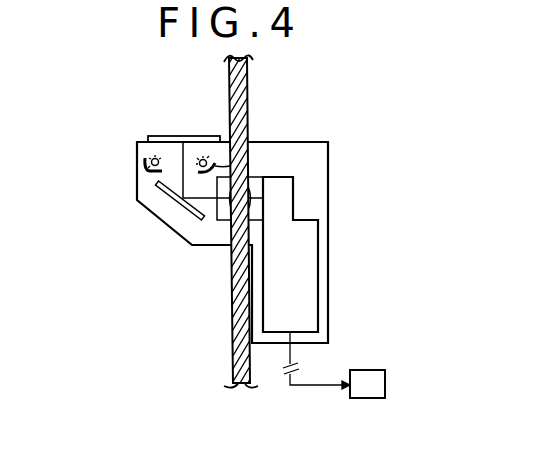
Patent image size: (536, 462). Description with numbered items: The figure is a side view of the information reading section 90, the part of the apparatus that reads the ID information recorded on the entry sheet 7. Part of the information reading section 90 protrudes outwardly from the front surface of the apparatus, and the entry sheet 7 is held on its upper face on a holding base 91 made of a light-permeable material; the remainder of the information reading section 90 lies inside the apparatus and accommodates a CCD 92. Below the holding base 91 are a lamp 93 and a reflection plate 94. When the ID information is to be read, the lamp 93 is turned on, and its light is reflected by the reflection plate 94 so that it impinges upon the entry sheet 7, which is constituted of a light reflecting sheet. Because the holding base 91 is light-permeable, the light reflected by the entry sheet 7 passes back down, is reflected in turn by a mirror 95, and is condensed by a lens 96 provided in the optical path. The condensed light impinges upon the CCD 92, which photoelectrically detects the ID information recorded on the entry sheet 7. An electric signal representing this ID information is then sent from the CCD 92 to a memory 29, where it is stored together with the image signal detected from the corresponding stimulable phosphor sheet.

The entry sheet 7 is at (177, 135).
The memory 29 is at (370, 370).
The information reading section 90 is at (119, 163).
The holding base 91 is at (145, 135).
The CCD 92 is at (300, 219).
The lamp 93 is at (205, 156).
The reflection plate 94 is at (215, 166).
The mirror 95 is at (160, 202).
The lens 96 is at (253, 186).